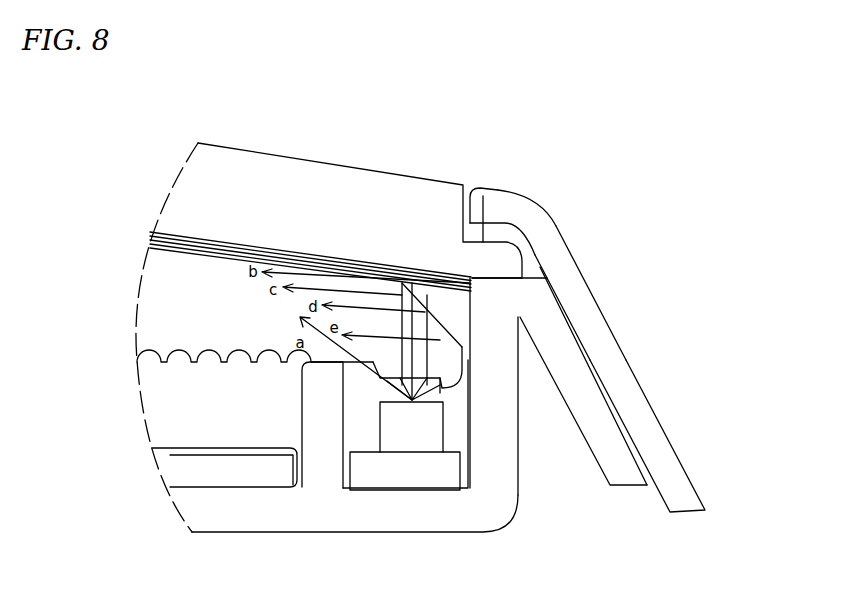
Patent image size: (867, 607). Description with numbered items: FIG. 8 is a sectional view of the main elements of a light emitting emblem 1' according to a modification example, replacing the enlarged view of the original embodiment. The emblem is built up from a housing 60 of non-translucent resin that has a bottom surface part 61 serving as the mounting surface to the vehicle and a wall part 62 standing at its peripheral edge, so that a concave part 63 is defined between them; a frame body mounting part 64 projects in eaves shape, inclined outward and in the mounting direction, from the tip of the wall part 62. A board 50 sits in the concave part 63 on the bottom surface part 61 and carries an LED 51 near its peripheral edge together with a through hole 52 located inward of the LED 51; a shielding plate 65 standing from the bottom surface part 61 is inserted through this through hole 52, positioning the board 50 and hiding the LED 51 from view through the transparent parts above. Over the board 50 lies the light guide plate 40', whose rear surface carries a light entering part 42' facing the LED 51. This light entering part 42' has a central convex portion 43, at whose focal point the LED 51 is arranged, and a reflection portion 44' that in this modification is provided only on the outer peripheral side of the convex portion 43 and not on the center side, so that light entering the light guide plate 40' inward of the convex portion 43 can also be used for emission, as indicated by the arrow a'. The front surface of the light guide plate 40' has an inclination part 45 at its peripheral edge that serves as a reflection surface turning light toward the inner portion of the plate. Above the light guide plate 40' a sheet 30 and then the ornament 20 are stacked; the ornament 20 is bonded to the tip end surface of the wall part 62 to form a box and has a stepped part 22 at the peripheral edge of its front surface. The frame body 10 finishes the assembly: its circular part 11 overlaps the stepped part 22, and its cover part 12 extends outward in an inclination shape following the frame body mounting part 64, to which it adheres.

The light emitting emblem 1' is at (683, 115).
The frame body 10 is at (540, 225).
The circular part 11 is at (497, 205).
The cover part 12 is at (645, 405).
The ornament 20 is at (265, 170).
The stepped part 22 is at (483, 196).
The sheet 30 is at (387, 260).
The light guide plate 40' is at (232, 320).
The light entering part 42' is at (689, 307).
The convex portion 43 is at (543, 280).
The reflection portion 44' is at (570, 321).
The inclination part 45 is at (420, 365).
The board 50 is at (187, 470).
The LED 51 is at (428, 430).
The through hole 52 is at (302, 448).
The housing 60 is at (263, 515).
The bottom surface part 61 is at (362, 515).
The wall part 62 is at (503, 433).
The concave part 63 is at (228, 482).
The frame body mounting part 64 is at (627, 475).
The shielding plate 65 is at (312, 400).